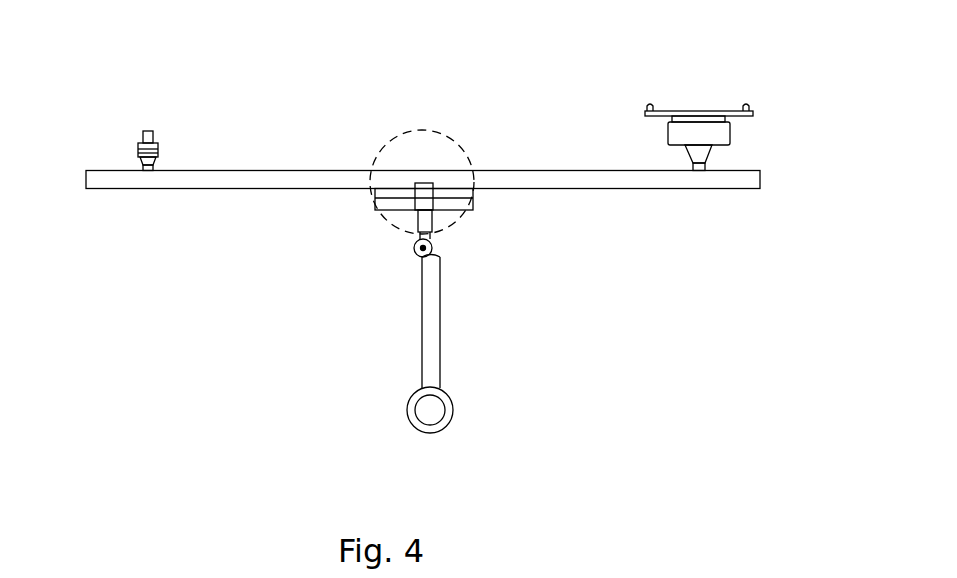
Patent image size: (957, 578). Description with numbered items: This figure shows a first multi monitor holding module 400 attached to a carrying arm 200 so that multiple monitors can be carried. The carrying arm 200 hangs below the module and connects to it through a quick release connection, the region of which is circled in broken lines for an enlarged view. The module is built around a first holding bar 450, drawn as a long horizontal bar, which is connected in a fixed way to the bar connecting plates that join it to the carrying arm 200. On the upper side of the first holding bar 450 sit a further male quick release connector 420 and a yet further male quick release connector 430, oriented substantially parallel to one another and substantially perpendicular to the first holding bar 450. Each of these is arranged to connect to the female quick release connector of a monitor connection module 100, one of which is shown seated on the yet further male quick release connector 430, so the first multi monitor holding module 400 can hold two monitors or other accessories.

The monitor connection module 100 is at (647, 95).
The carrying arm 200 is at (395, 375).
The first multi monitor holding module 400 is at (215, 228).
The further male quick release connector 420 is at (145, 122).
The yet further male quick release connector 430 is at (678, 157).
The first holding bar 450 is at (497, 170).